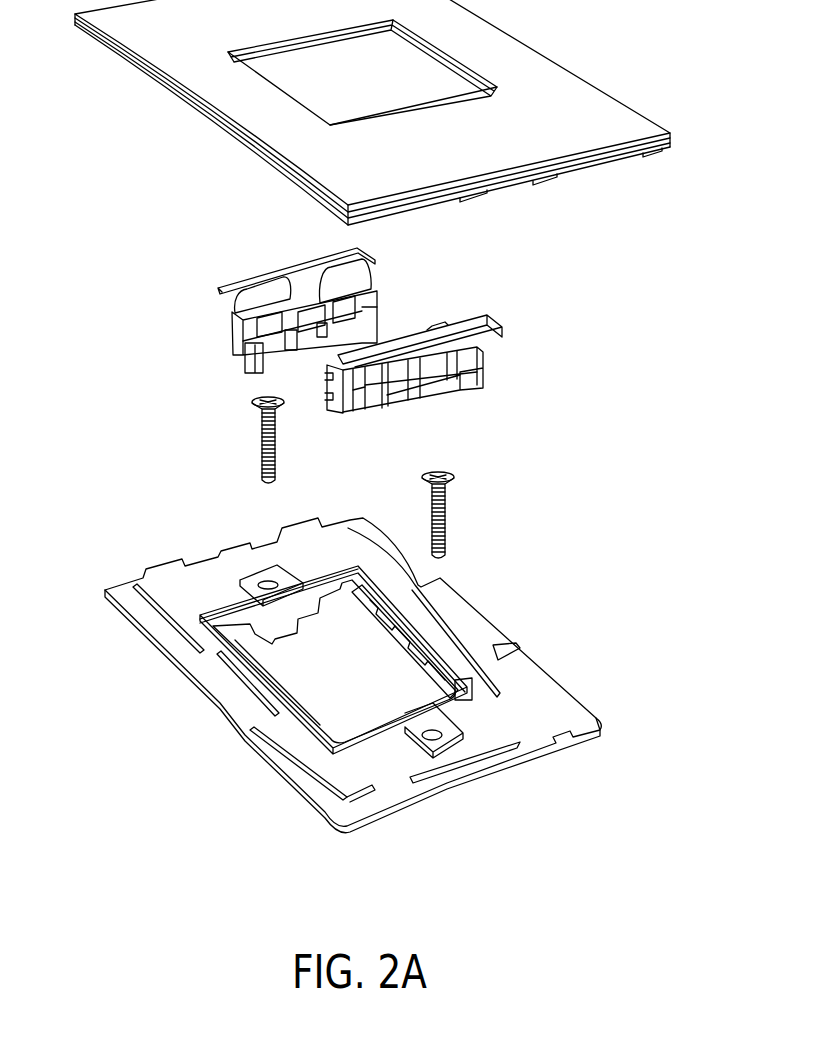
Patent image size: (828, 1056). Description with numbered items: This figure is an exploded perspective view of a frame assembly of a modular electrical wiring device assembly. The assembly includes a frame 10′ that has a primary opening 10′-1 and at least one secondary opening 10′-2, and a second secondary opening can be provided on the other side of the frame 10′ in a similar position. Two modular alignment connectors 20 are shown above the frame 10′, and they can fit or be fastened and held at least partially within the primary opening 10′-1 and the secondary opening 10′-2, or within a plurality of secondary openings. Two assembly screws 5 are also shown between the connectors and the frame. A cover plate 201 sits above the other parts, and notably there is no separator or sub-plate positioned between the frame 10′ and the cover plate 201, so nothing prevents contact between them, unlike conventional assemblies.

The cover plate 201 is at (513, 35).
The modular alignment connectors 20 is at (230, 298).
The assembly screws 5 is at (259, 458).
The frame 10′ is at (472, 618).
The primary opening 10′-1 is at (323, 678).
The secondary opening 10′-2 is at (440, 662).